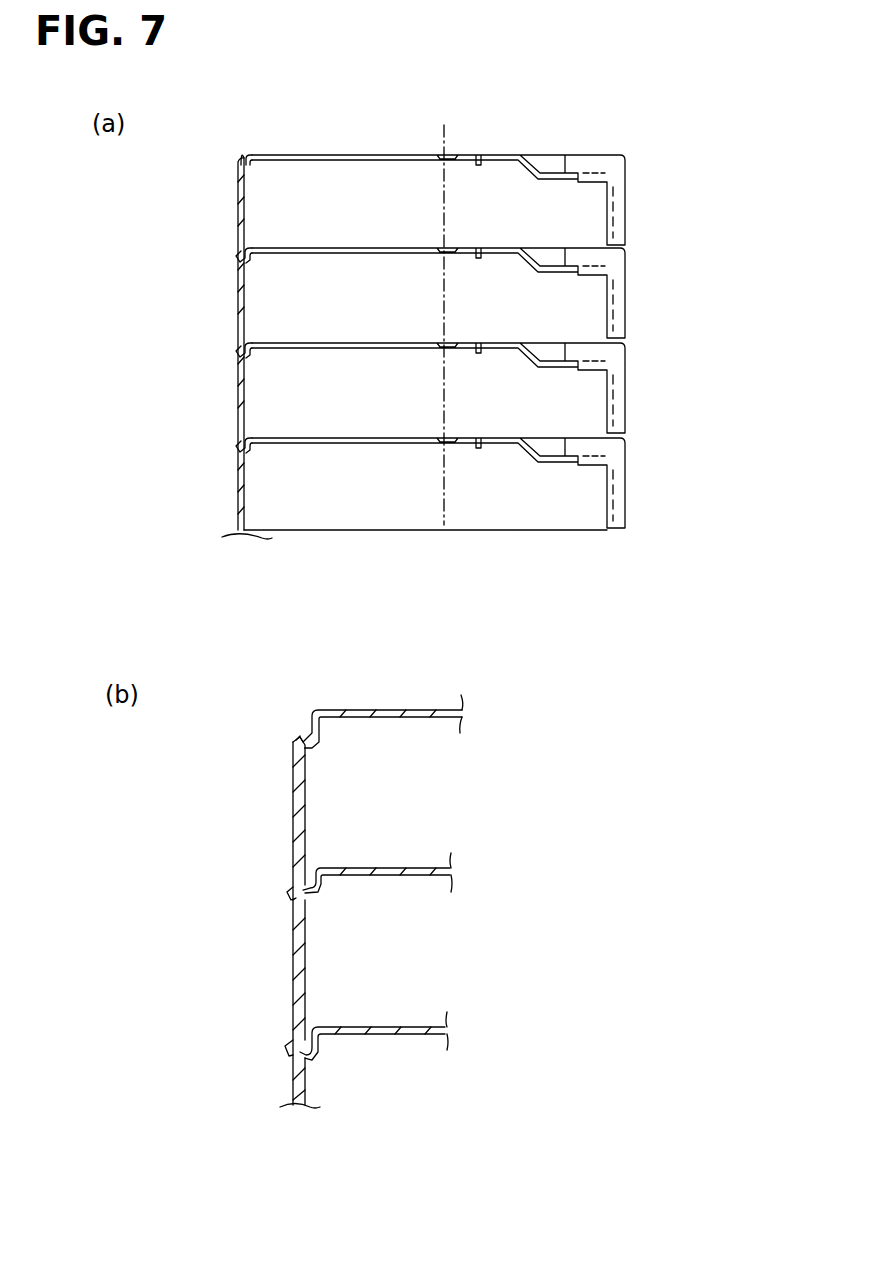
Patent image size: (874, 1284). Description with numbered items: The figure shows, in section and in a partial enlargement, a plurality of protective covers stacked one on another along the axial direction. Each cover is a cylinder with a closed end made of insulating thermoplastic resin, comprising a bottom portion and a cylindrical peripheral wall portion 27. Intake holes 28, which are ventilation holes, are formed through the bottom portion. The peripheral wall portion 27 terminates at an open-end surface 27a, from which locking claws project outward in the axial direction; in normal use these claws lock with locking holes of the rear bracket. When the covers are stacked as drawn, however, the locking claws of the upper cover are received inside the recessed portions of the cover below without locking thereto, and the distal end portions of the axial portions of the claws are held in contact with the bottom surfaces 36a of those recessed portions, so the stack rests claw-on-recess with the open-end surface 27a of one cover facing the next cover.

The peripheral wall portion 27 is at (238, 213).
The open-end surface 27a is at (498, 532).
The intake holes 28 is at (420, 866).
The bottom surfaces 36a is at (297, 740).